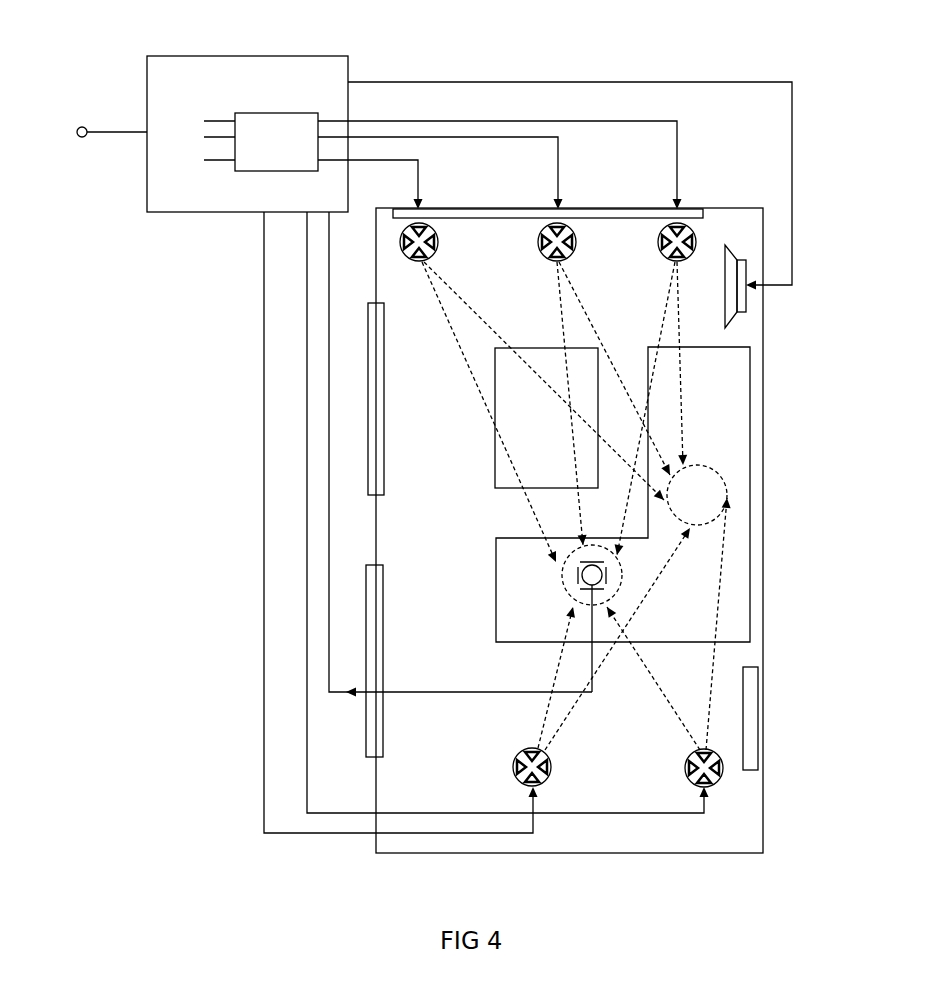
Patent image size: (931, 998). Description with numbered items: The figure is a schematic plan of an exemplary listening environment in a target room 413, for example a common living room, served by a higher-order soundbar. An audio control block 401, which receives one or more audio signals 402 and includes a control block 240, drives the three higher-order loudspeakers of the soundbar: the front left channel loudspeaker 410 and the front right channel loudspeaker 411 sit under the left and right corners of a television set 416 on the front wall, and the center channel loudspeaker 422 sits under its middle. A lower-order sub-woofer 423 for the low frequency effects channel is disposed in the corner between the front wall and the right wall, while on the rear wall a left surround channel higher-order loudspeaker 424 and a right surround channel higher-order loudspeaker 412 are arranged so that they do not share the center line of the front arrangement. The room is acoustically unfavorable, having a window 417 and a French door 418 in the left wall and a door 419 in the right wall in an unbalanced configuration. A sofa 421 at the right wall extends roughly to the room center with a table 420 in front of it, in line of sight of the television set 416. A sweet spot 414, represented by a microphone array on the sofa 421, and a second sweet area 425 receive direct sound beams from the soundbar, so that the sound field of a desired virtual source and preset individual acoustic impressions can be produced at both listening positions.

The audio control block 401 is at (272, 56).
The control block 240 is at (277, 113).
The audio signals 402 is at (108, 128).
The front left (Lf) channel higher-order loudspeaker 410 is at (433, 255).
The front right (Rf) channel higher-order loudspeaker 411 is at (660, 248).
The right surround (Rs) channel higher-order loudspeaker 412 is at (688, 778).
The target room 413 is at (437, 493).
The sweet spot 414 is at (568, 583).
The television set 416 is at (520, 222).
The window 417 is at (384, 345).
The French door 418 is at (383, 587).
The door 419 is at (758, 730).
The table 420 is at (495, 453).
The sofa 421 is at (489, 538).
The center (C) higher-order loudspeaker 422 is at (572, 257).
The lower-order sub-woofer 423 is at (728, 293).
The left surround (Ls) channel higher-order loudspeaker 424 is at (513, 760).
The sweet area 425 is at (713, 470).